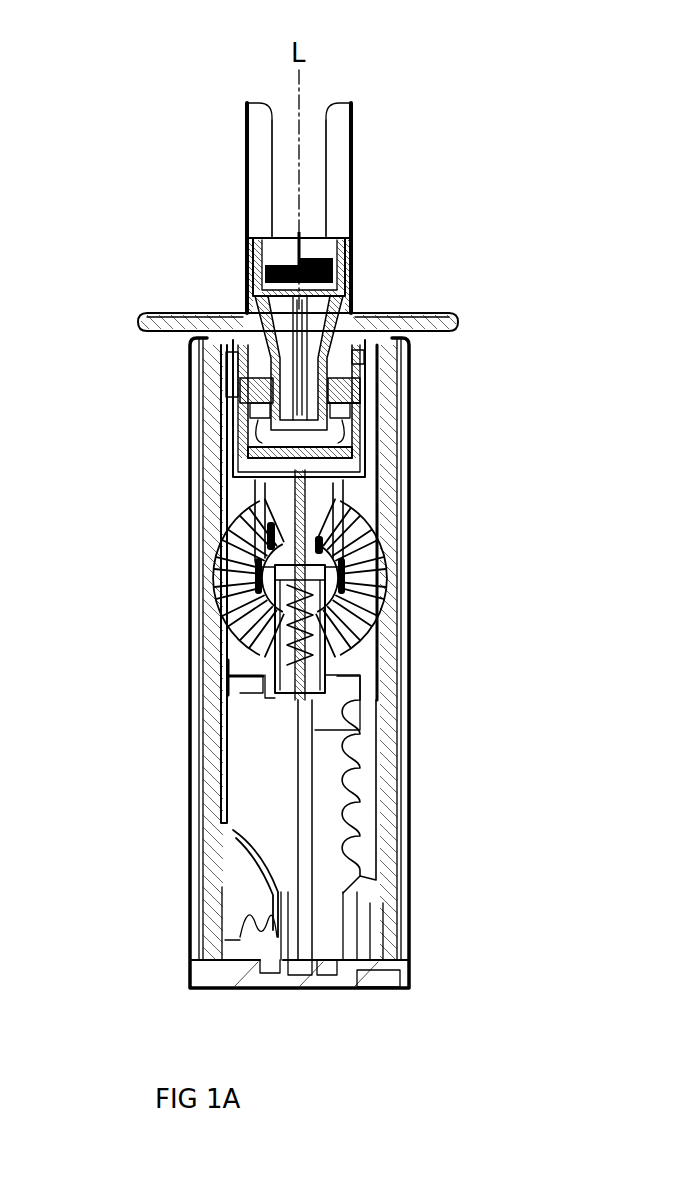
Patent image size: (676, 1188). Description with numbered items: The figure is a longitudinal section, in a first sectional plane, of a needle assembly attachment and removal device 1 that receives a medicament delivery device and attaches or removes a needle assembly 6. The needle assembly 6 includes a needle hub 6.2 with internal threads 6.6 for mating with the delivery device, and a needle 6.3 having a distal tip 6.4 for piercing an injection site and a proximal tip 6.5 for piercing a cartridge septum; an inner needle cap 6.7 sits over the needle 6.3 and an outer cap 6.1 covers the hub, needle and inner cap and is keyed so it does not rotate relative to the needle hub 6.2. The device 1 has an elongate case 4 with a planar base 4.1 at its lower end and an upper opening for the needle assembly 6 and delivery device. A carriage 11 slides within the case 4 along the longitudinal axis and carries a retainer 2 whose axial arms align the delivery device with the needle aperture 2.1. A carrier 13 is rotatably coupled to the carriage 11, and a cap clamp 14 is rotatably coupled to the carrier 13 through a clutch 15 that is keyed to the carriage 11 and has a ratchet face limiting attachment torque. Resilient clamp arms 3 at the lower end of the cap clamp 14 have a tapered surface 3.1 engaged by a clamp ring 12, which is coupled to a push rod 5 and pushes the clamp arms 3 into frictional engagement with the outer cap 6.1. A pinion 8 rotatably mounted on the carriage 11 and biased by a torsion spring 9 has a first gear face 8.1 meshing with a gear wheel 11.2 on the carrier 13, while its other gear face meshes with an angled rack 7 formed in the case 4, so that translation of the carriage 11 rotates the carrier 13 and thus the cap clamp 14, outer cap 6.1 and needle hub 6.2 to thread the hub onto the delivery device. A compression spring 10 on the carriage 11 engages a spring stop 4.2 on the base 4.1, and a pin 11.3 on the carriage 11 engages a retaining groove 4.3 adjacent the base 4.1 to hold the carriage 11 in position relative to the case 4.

The needle assembly attachment and removal device 1 is at (180, 760).
The retainer 2 is at (255, 118).
The needle aperture 2.1 is at (311, 123).
The clamp arms 3 is at (252, 430).
The tapered surface 3.1 is at (350, 425).
The case 4 is at (212, 828).
The base 4.1 is at (218, 972).
The spring stop 4.2 is at (313, 938).
The retaining groove 4.3 is at (250, 918).
The push rod 5 is at (222, 567).
The needle assembly 6 is at (340, 228).
The outer cap 6.1 is at (352, 313).
The needle hub 6.2 is at (330, 260).
The needle 6.3 is at (352, 396).
The distal tip 6.4 is at (355, 412).
The proximal tip 6.5 is at (282, 238).
The internal threads 6.6 is at (265, 275).
The inner needle cap 6.7 is at (242, 313).
The rack 7 is at (365, 740).
The pinion 8 is at (232, 623).
The first gear face 8.1 is at (230, 547).
The torsion spring 9 is at (222, 612).
The compression spring 10 is at (232, 690).
The carriage 11 is at (333, 560).
The gear wheel 11.2 is at (333, 505).
The pin 11.3 is at (290, 663).
The clamp ring 12 is at (257, 446).
The carrier 13 is at (232, 393).
The cap clamp 14 is at (365, 361).
The clutch 15 is at (348, 403).